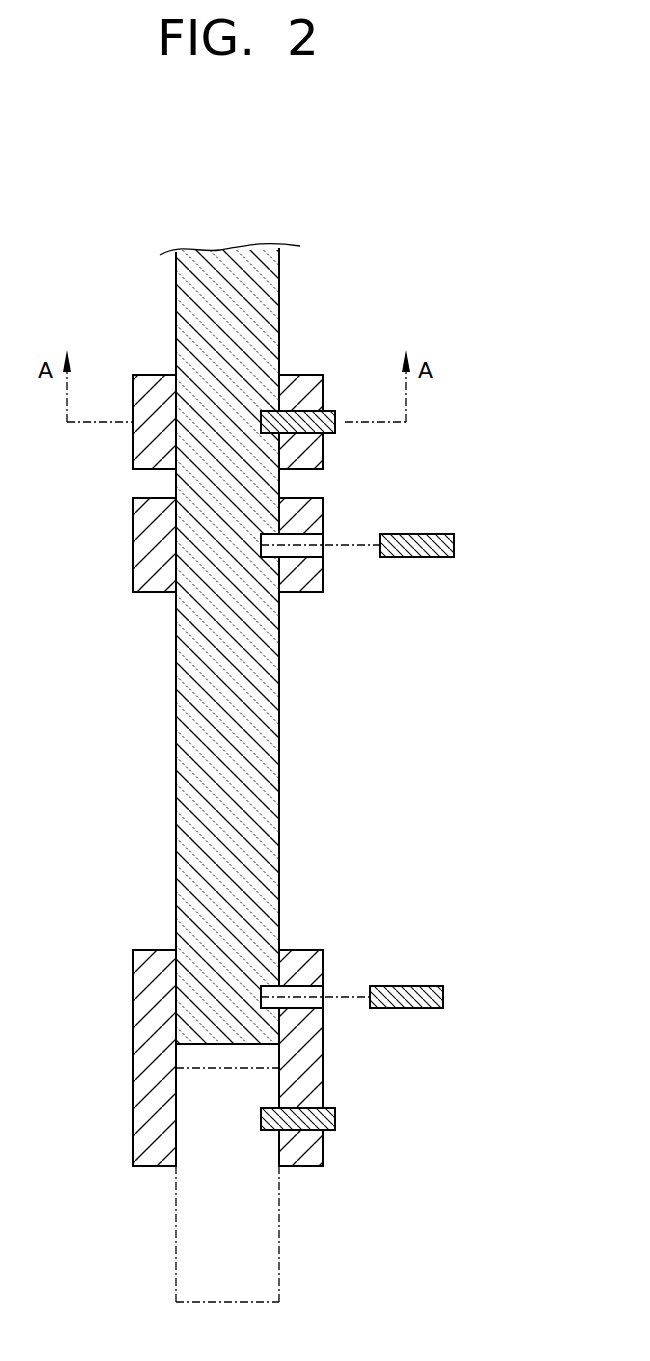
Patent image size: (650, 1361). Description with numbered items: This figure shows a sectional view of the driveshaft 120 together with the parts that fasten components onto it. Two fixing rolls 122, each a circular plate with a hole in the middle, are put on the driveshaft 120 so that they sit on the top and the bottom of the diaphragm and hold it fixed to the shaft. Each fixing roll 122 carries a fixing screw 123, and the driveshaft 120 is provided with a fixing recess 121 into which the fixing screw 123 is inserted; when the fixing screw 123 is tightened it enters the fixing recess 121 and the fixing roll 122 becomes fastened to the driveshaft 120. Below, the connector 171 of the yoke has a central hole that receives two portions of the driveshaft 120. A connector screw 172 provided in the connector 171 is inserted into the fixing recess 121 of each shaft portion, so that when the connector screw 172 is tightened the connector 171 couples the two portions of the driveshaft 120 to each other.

The driveshaft 120 is at (176, 290).
The fixing recess 121 is at (284, 416).
The fixing roll 122 is at (133, 448).
The fixing screw 123 is at (335, 433).
The connector 171 is at (323, 1060).
The connector screw 172 is at (335, 1122).